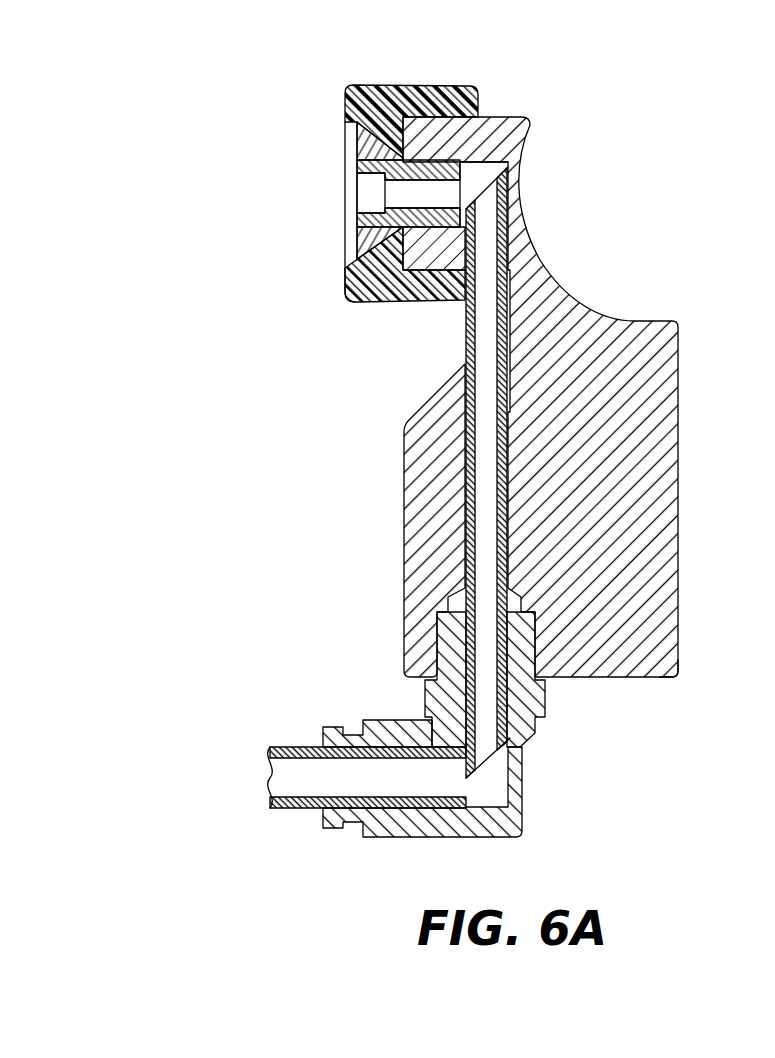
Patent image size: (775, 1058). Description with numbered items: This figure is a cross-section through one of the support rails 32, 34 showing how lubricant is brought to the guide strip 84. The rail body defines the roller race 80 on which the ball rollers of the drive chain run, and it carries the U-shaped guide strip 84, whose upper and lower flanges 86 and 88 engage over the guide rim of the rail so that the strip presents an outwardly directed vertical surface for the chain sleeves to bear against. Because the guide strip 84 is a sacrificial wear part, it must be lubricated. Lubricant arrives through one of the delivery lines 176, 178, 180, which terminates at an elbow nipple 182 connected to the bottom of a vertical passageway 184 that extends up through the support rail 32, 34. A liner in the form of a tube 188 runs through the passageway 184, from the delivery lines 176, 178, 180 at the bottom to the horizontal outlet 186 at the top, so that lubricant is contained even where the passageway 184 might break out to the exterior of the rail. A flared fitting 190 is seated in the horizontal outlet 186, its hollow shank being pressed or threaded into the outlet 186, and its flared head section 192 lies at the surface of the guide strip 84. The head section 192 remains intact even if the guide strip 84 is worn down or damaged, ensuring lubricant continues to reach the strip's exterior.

The roller race 80 is at (557, 277).
The guide strip 84 is at (354, 103).
The upper flange 86 is at (422, 87).
The lower flange 88 is at (400, 304).
The flared fitting 190 is at (367, 192).
The flared head section 192 is at (360, 228).
The horizontal outlet 186 is at (482, 177).
The tube 188 is at (466, 342).
The vertical passageway 184 is at (460, 496).
The elbow nipple 182 is at (523, 796).
The inner support rail 32 is at (708, 694).
The outer support rail 34 is at (678, 678).
The delivery line 176 is at (341, 794).
The delivery line 178 is at (341, 794).
The delivery line 180 is at (294, 809).